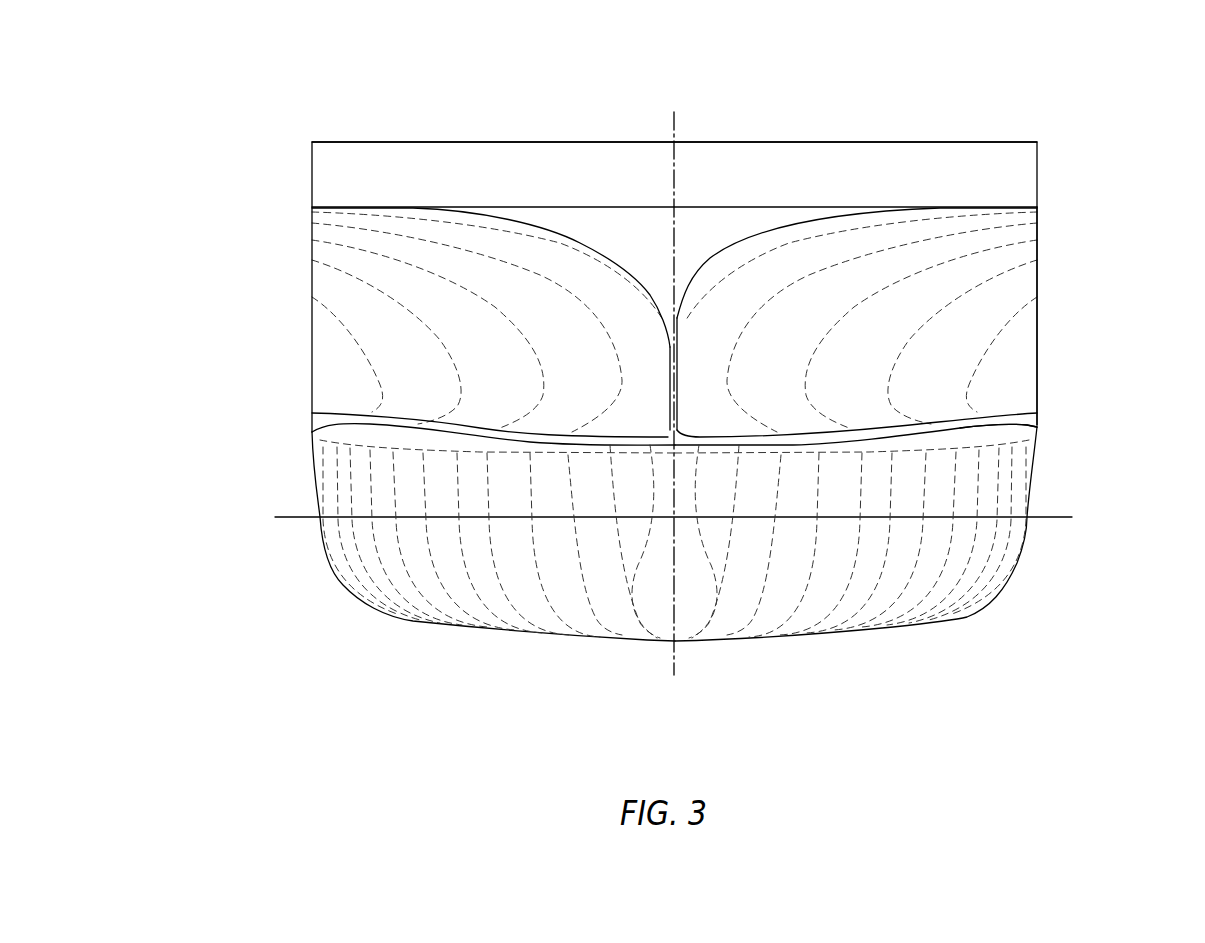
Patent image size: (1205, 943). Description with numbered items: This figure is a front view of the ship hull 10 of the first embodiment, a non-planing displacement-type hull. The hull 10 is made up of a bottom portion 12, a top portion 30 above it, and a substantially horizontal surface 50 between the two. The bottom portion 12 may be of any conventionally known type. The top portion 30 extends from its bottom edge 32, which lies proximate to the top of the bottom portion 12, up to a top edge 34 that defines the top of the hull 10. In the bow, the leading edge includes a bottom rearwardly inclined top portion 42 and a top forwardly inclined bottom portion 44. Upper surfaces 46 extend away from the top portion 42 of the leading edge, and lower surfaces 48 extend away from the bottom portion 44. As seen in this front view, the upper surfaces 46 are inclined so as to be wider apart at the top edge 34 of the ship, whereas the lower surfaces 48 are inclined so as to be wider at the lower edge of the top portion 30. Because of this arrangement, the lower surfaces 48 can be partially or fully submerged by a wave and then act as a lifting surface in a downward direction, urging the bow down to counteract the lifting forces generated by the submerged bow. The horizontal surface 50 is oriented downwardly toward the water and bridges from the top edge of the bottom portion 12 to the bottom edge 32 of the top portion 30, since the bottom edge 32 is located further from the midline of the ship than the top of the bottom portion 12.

The ship hull 10 is at (900, 105).
The bottom portion 12 is at (1037, 586).
The top portion 30 is at (1098, 301).
The bottom edge 32 is at (312, 432).
The top edge 34 is at (312, 142).
The bottom rearwardly inclined top portion 42 is at (667, 419).
The top forwardly inclined bottom portion 44 is at (670, 349).
The upper surfaces 46 is at (929, 250).
The lower surfaces 48 is at (942, 405).
The horizontal surface 50 is at (993, 425).